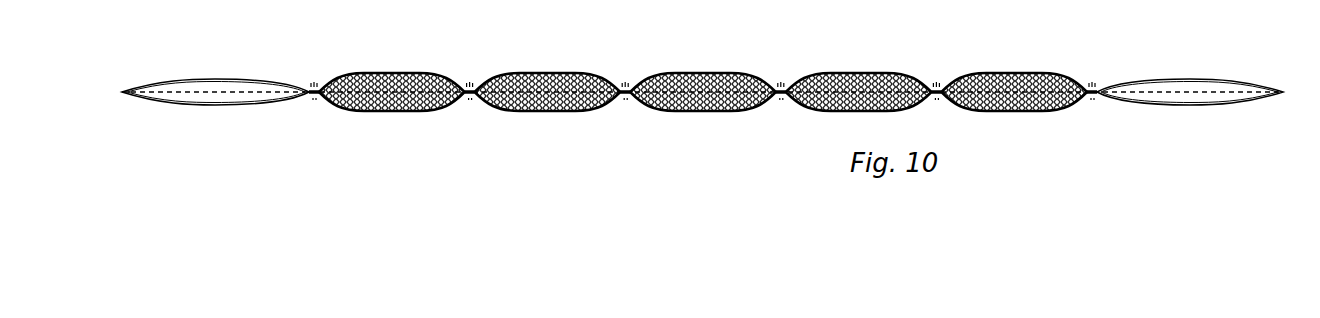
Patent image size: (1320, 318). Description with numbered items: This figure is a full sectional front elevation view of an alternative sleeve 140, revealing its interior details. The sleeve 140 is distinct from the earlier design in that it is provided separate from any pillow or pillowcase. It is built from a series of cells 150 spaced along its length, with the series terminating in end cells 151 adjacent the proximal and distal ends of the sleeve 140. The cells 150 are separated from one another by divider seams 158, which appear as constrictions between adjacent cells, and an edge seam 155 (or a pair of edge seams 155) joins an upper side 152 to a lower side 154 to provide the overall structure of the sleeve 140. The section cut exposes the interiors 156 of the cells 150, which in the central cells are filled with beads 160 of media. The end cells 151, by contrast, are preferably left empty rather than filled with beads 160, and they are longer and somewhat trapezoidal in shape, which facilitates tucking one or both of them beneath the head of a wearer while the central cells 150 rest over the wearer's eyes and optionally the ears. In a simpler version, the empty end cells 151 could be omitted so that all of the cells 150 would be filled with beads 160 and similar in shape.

The sleeve 140 is at (339, 128).
The cells 150 is at (692, 87).
The end cells 151 is at (238, 120).
The upper side 152 is at (567, 74).
The lower side 154 is at (533, 111).
The edge seam 155 is at (1143, 90).
The interiors 156 is at (222, 84).
The divider seams 158 is at (312, 96).
The beads of media 160 is at (413, 80).